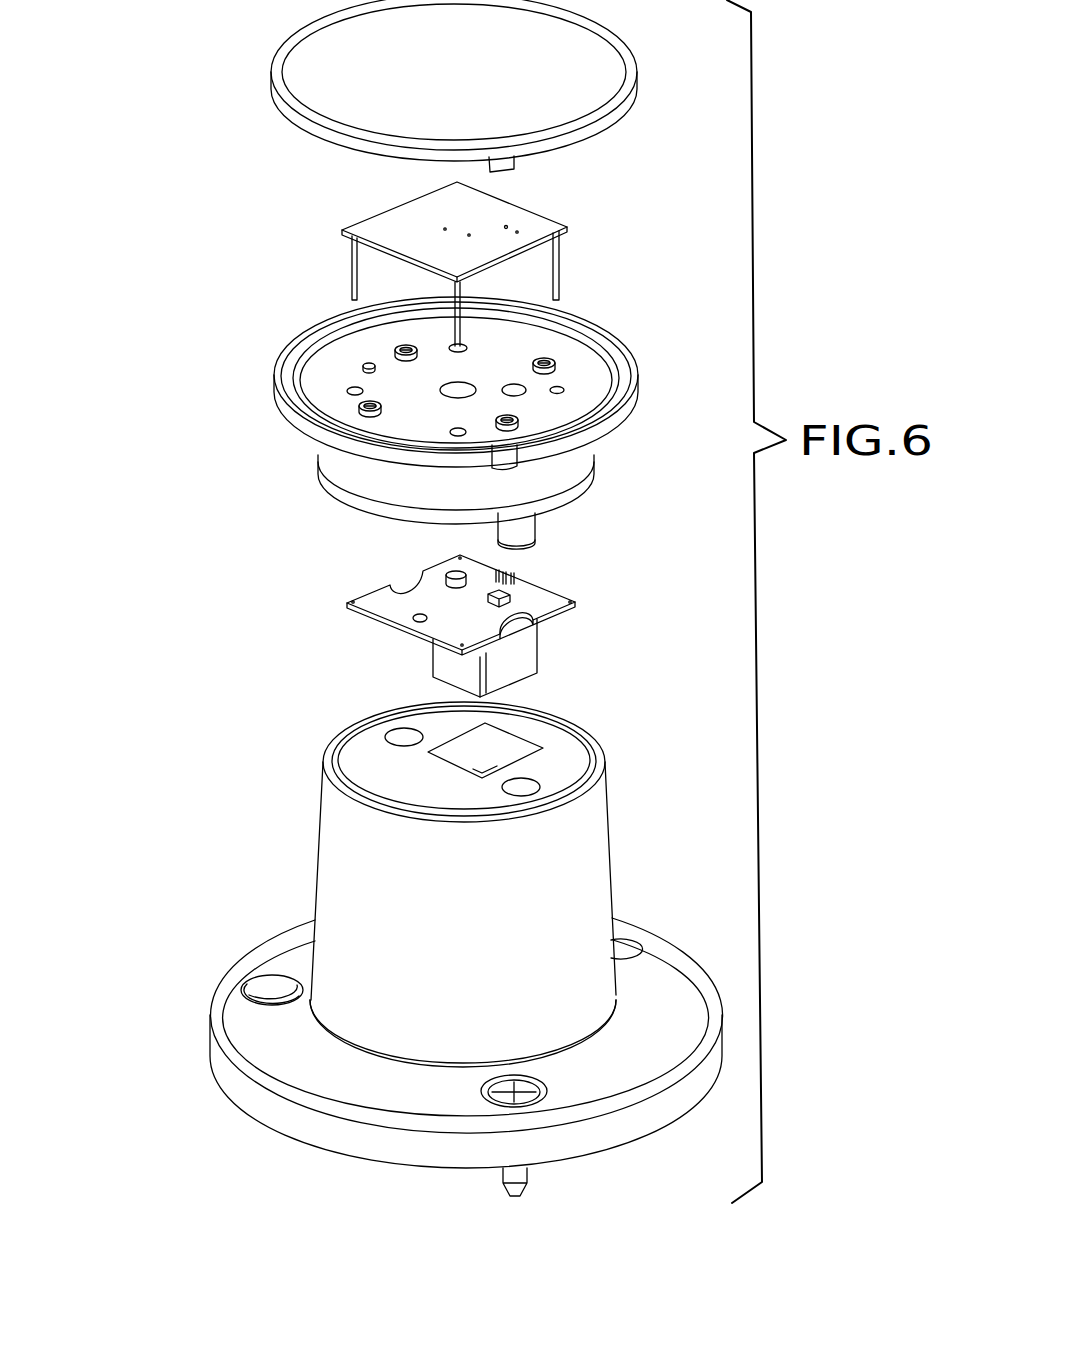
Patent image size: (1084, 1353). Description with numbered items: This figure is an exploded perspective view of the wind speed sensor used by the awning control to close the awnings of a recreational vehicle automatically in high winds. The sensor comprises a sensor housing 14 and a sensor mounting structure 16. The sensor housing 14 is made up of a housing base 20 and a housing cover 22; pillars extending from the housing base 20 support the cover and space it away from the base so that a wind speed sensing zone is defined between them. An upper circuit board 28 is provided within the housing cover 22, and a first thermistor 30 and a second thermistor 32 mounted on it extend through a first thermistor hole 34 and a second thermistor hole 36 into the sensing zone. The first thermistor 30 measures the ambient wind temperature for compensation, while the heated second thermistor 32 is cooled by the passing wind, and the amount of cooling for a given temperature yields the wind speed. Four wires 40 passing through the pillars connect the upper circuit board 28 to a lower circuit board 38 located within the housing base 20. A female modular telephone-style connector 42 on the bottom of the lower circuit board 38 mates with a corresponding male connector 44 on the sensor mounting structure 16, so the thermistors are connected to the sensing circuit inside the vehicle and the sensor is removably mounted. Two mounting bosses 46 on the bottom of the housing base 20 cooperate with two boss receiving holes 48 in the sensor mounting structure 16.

The sensor housing 14 is at (140, 208).
The sensor mounting structure 16 is at (318, 852).
The housing base 20 is at (328, 482).
The housing cover 22 is at (253, 85).
The upper circuit board 28 is at (373, 227).
The first thermistor 30 is at (506, 226).
The second thermistor 32 is at (468, 229).
The first thermistor hole 34 is at (521, 393).
The second thermistor hole 36 is at (452, 397).
The lower circuit board 38 is at (367, 592).
The wires 40 is at (352, 268).
The female RJ-11 connector 42 is at (432, 656).
The male RJ-11 connector 44 is at (488, 768).
The mounting bosses 46 is at (537, 526).
The boss receiving holes 48 is at (397, 737).